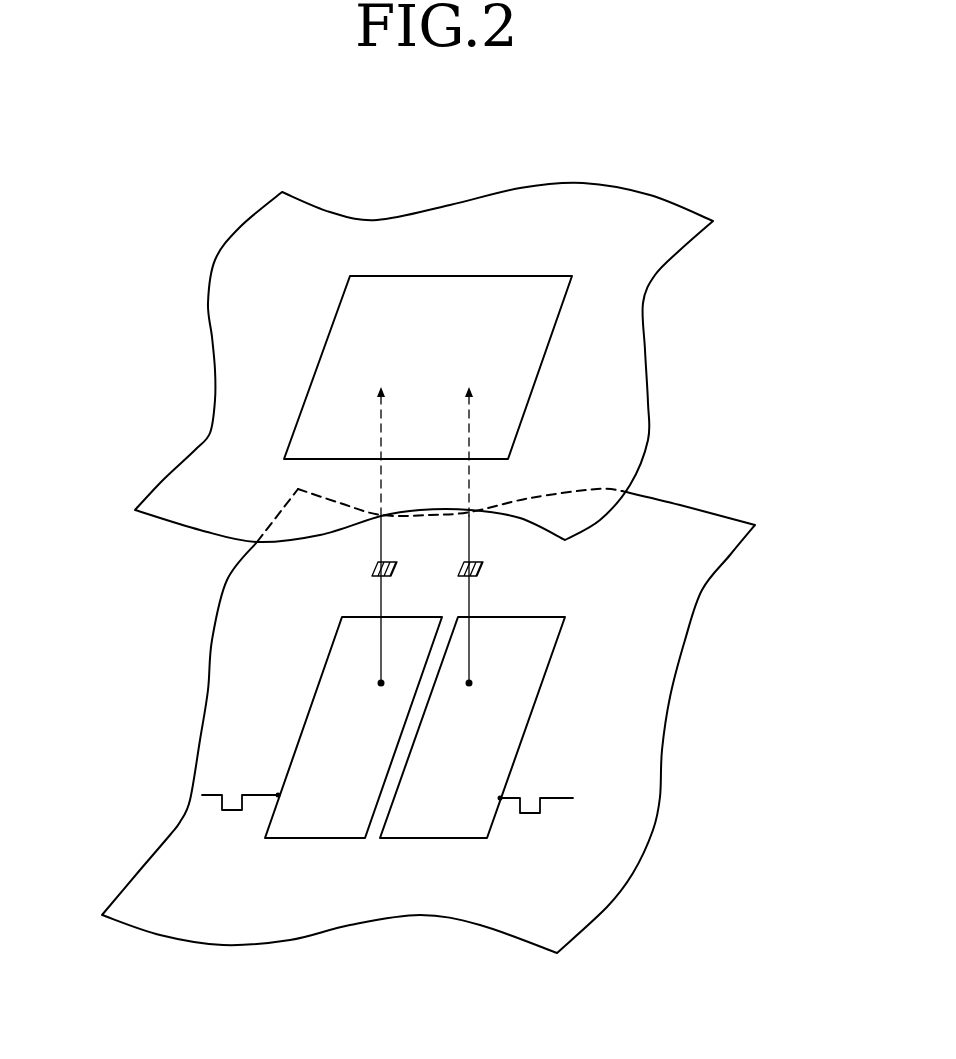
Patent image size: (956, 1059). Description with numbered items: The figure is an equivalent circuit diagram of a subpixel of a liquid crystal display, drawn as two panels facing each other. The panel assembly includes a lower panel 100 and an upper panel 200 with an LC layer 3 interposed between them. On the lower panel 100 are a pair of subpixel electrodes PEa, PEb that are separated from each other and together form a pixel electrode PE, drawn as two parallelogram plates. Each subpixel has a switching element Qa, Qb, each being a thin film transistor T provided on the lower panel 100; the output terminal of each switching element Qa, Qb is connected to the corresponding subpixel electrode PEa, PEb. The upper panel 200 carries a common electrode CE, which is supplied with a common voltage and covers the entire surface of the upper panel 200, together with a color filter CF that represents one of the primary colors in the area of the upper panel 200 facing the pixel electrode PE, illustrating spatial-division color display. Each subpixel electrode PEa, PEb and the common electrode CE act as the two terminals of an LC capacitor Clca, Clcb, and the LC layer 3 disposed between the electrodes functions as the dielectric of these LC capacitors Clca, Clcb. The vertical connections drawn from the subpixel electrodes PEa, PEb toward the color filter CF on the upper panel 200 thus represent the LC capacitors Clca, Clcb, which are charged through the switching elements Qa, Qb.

The upper panel 200 is at (450, 362).
The common electrode CE is at (642, 338).
The color filter CF is at (538, 380).
The lower panel 100 is at (678, 698).
The LC layer 3 is at (421, 721).
The LC capacitor Clca is at (347, 537).
The LC capacitor Clcb is at (505, 537).
The pixel electrode PE is at (415, 825).
The subpixel electrode PEa is at (330, 838).
The subpixel electrode PEb is at (405, 838).
The switching element Qa is at (241, 787).
The switching element Qb is at (536, 790).
The thin film transistor T is at (387, 809).